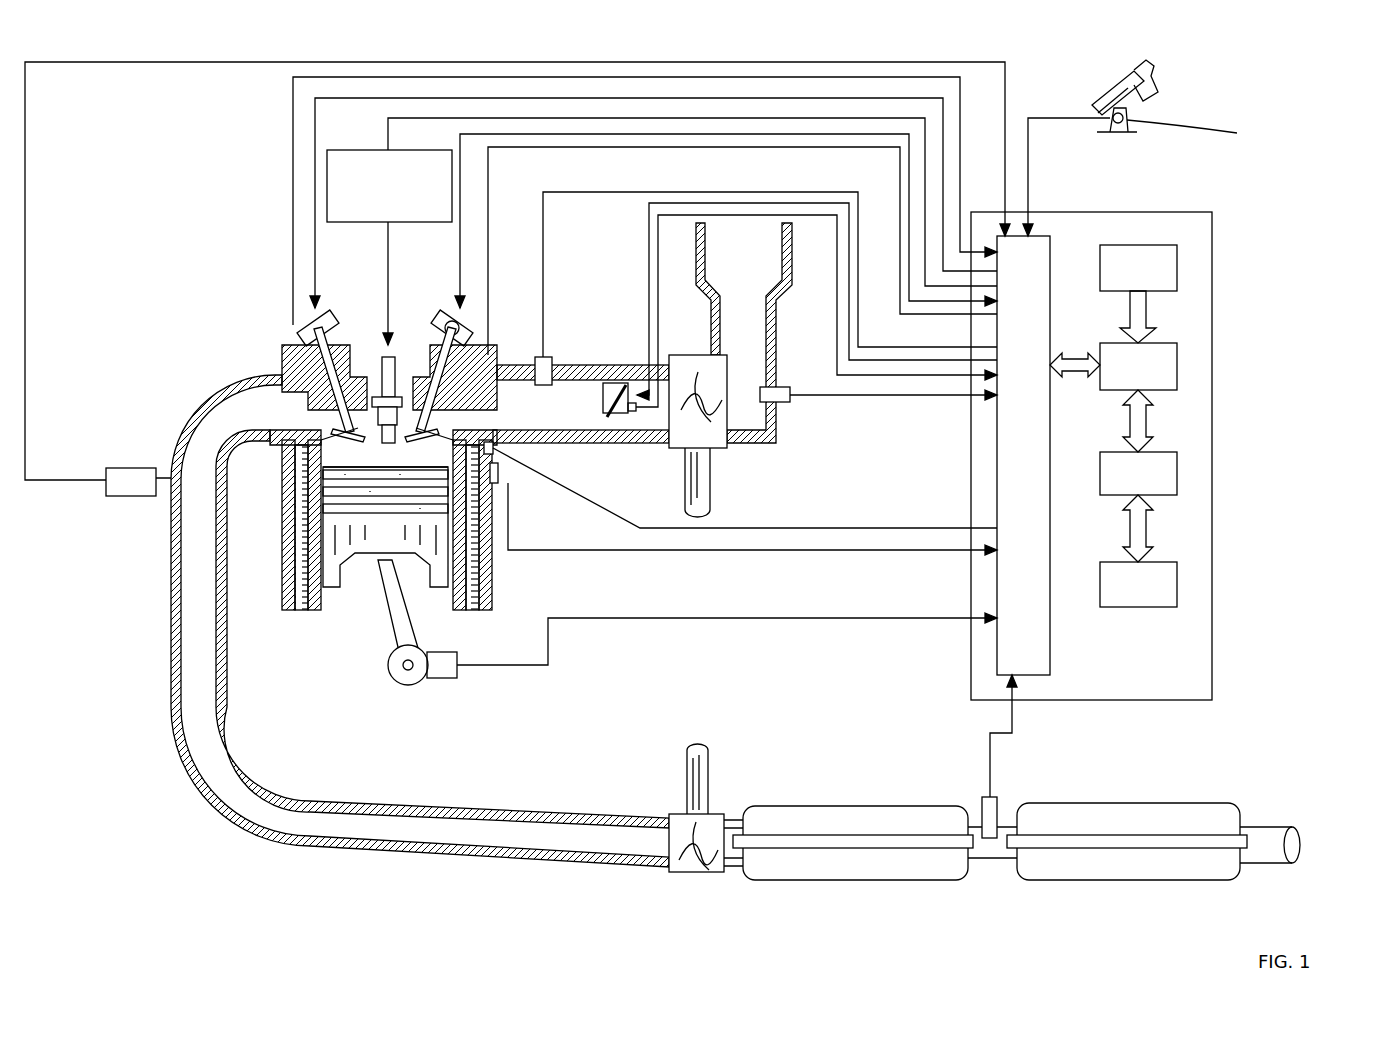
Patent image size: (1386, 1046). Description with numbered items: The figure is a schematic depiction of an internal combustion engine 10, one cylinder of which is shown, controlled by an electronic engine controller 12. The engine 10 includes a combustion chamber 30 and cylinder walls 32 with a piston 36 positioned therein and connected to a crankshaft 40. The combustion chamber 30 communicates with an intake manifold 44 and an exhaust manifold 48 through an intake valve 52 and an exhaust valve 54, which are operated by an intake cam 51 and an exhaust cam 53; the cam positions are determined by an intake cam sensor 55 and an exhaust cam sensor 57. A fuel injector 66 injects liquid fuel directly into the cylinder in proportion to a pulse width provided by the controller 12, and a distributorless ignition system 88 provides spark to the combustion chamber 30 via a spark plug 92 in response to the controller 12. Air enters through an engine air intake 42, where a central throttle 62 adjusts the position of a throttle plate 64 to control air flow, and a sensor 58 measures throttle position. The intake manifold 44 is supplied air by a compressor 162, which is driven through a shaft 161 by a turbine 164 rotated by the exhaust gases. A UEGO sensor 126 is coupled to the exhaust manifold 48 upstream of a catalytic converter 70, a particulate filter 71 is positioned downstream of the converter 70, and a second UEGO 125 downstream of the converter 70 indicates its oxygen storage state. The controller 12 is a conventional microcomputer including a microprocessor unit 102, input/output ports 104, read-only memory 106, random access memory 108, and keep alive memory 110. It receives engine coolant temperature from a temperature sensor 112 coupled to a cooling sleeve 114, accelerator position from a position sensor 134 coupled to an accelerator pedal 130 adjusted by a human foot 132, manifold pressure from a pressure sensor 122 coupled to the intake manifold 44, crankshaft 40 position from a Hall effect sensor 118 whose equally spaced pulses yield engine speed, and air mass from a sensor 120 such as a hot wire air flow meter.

The internal combustion engine 10 is at (210, 295).
The electronic engine controller 12 is at (1205, 212).
The combustion chamber 30 is at (290, 572).
The cylinder walls 32 is at (312, 612).
The piston 36 is at (377, 583).
The crankshaft 40 is at (398, 683).
The engine air intake 42 is at (752, 274).
The intake manifold 44 is at (578, 400).
The exhaust manifold 48 is at (262, 422).
The intake cam 51 is at (450, 313).
The intake valve 52 is at (405, 375).
The exhaust cam 53 is at (323, 313).
The exhaust valve 54 is at (340, 418).
The intake cam sensor 55 is at (468, 332).
The exhaust cam sensor 57 is at (302, 328).
The throttle position sensor 58 is at (622, 420).
The central throttle 62 is at (610, 392).
The throttle plate 64 is at (633, 382).
The fuel injector 66 is at (492, 456).
The catalytic converter 70 is at (755, 880).
The particulate filter 71 is at (1020, 880).
The distributorless ignition system 88 is at (343, 150).
The spark plug 92 is at (382, 362).
The microprocessor unit 102 is at (1178, 365).
The input/output ports 104 is at (1052, 240).
The read-only memory 106 is at (1178, 268).
The random access memory 108 is at (1178, 475).
The keep alive memory 110 is at (1178, 585).
The temperature sensor 112 is at (500, 485).
The cooling sleeve 114 is at (485, 578).
The Hall effect sensor 118 is at (442, 678).
The air mass sensor 120 is at (781, 387).
The pressure sensor 122 is at (543, 356).
The second UEGO sensor 125 is at (982, 800).
The UEGO sensor 126 is at (106, 476).
The accelerator pedal 130 is at (1092, 95).
The human foot 132 is at (1152, 78).
The position sensor 134 is at (1148, 177).
The shaft 161 is at (711, 455).
The compressor 162 is at (690, 355).
The turbine 164 is at (669, 818).